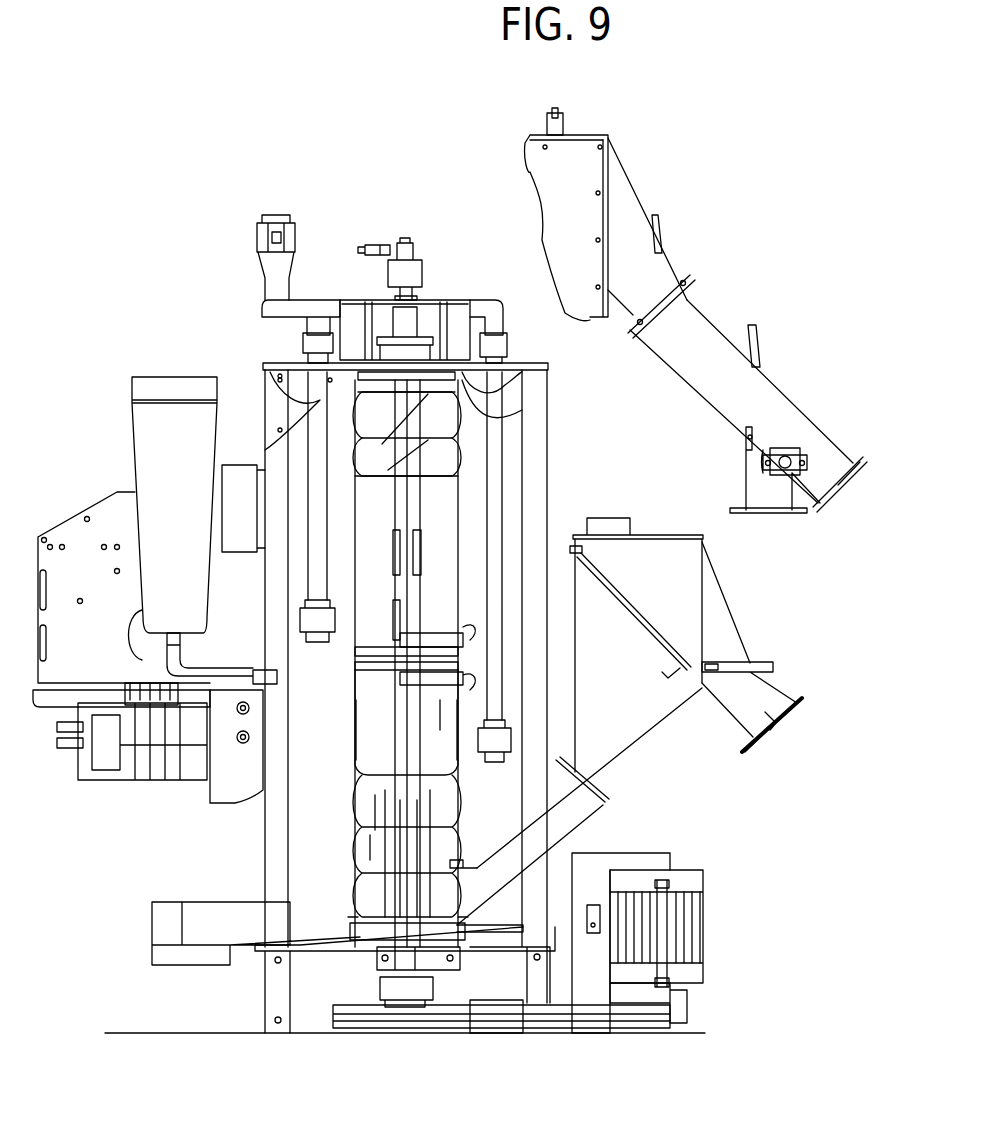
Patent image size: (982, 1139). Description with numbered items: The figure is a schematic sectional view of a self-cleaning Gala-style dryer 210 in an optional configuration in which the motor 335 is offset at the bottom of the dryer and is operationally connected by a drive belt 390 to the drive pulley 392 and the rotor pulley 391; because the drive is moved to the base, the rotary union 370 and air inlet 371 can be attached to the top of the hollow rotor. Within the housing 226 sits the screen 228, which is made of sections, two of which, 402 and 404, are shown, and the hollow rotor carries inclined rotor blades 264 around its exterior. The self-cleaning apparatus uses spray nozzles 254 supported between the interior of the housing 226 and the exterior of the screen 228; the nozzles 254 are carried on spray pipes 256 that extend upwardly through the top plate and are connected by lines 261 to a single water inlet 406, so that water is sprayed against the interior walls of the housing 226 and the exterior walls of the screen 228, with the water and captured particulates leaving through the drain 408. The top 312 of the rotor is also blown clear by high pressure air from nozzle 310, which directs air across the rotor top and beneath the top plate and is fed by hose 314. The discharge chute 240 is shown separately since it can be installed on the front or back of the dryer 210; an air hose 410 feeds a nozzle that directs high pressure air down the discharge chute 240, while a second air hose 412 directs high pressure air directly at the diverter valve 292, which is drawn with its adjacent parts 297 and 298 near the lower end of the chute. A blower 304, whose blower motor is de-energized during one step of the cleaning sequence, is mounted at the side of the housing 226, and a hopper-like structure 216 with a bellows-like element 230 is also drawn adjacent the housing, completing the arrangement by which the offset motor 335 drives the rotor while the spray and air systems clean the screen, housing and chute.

The dryer 210 is at (172, 228).
The hopper 216 is at (688, 598).
The housing 226 is at (527, 425).
The screen 228 is at (362, 716).
The bellows 230 is at (372, 822).
The discharge chute 240 is at (697, 328).
The spray nozzles 254 is at (317, 645).
The spray pipes 256 is at (315, 585).
The lines 261 is at (310, 320).
The inclined rotor blades 264 is at (372, 847).
The diverter valve 292 is at (748, 442).
The tube end flange 297 is at (843, 497).
The support bracket 298 is at (745, 484).
The blower 304 is at (145, 432).
The nozzle 310 is at (470, 415).
The top of the rotor 312 is at (282, 365).
The hose 314 is at (470, 380).
The motor 335 is at (693, 915).
The rotary union 370 is at (414, 268).
The air inlet 371 is at (375, 247).
The drive belt 390 is at (532, 1028).
The rotor pulley 391 is at (380, 1022).
The drive pulley 392 is at (666, 1028).
The screen section 402 is at (453, 492).
The screen section 404 is at (440, 712).
The water inlet 406 is at (270, 222).
The drain 408 is at (188, 958).
The air hose 410 is at (660, 226).
The air hose 412 is at (758, 341).